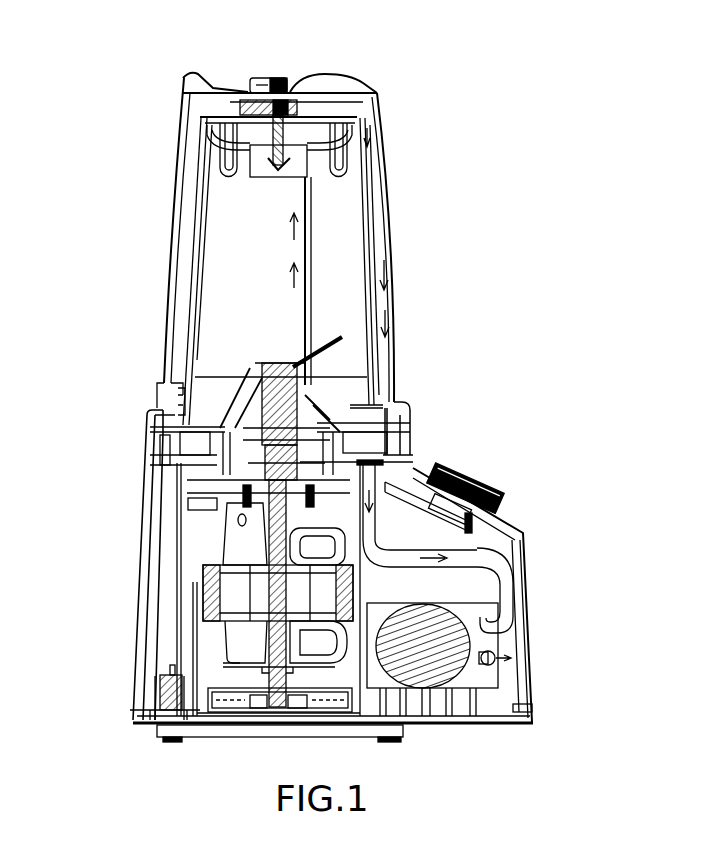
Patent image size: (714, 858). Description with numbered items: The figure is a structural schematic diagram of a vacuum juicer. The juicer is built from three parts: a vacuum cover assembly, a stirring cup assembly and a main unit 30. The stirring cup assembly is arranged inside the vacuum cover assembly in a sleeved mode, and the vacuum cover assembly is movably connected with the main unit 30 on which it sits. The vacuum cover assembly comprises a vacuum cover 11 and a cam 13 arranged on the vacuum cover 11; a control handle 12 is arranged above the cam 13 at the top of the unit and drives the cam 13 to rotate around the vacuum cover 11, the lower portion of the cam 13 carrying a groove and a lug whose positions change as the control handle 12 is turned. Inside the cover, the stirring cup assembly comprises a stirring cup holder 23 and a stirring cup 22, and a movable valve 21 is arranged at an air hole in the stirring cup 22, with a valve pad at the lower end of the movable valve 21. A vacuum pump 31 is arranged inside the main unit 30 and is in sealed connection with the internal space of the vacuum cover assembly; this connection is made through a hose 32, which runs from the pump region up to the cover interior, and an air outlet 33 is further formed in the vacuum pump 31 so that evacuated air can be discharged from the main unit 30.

The vacuum cover 11 is at (382, 185).
The control handle 12 is at (255, 80).
The cam 13 is at (230, 97).
The movable valve 21 is at (223, 113).
The stirring cup 22 is at (373, 235).
The stirring cup holder 23 is at (410, 430).
The main unit 30 is at (142, 518).
The vacuum pump 31 is at (482, 618).
The hose 32 is at (485, 557).
The air outlet 33 is at (492, 657).